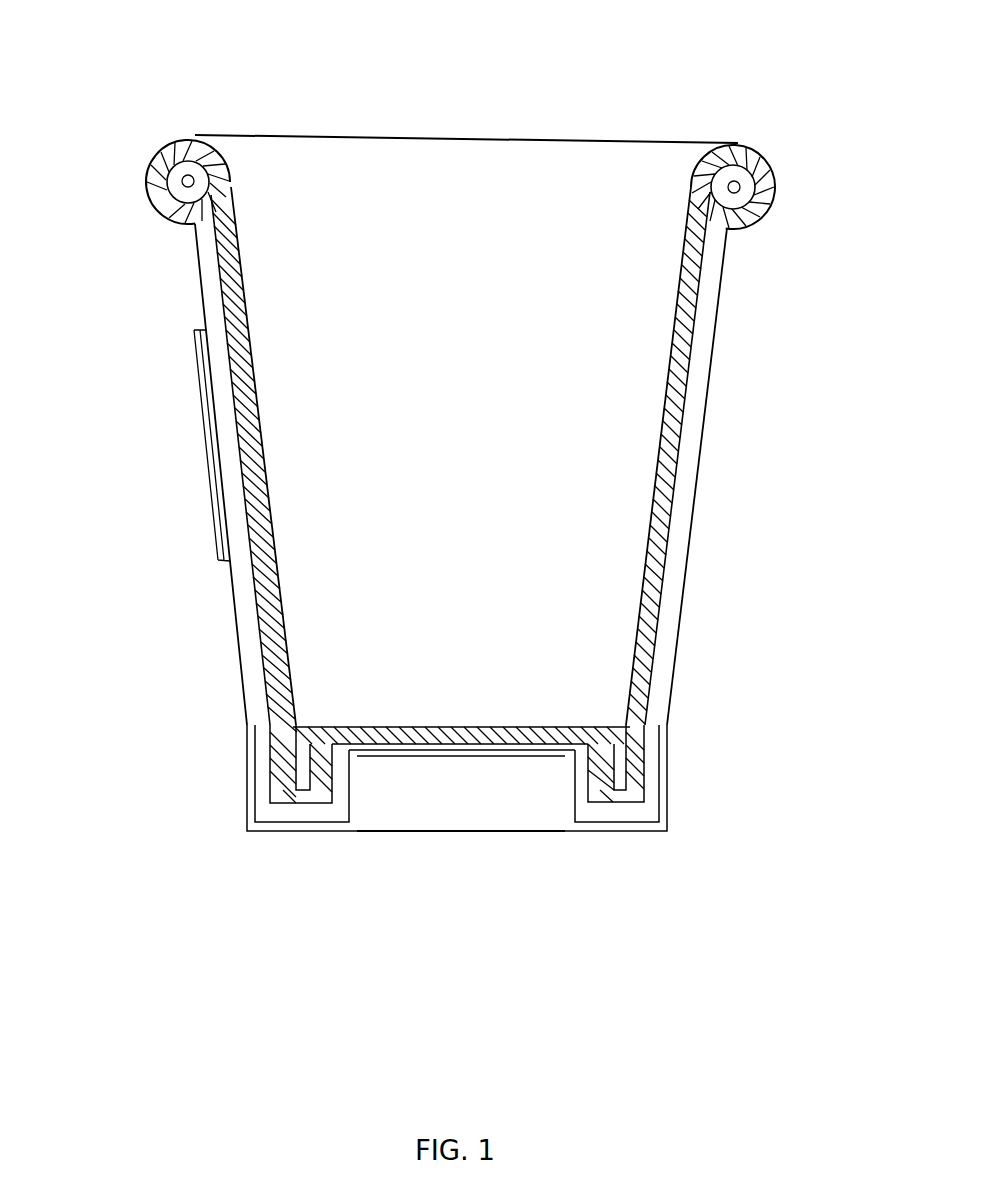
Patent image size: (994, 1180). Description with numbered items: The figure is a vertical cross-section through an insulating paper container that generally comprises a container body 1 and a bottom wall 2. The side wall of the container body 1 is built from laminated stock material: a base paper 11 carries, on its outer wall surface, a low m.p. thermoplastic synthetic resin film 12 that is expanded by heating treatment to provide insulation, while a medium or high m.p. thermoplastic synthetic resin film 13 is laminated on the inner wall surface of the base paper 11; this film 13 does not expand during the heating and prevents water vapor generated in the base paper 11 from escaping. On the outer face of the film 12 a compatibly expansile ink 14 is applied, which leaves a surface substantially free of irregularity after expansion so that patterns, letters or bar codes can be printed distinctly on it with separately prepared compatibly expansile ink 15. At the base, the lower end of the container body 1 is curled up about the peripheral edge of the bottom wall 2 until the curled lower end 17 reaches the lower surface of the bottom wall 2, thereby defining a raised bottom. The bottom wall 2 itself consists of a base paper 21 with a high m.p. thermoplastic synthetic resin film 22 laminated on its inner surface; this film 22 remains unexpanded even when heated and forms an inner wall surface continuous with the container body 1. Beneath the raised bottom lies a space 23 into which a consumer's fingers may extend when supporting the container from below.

The container body 1 is at (505, 175).
The base paper 11 is at (258, 442).
The low m.p. thermoplastic synthetic resin film 12 is at (243, 592).
The medium or high m.p. thermoplastic synthetic resin film 13 is at (227, 291).
The compatibly expansile ink 14 is at (198, 288).
The separately prepared compatibly expansile ink 15 is at (200, 395).
The curled lower end 17 is at (273, 832).
The bottom wall 2 is at (480, 715).
The base paper 21 is at (403, 760).
The high m.p. thermoplastic synthetic resin film 22 is at (522, 757).
The raised bottom's space 23 is at (453, 818).